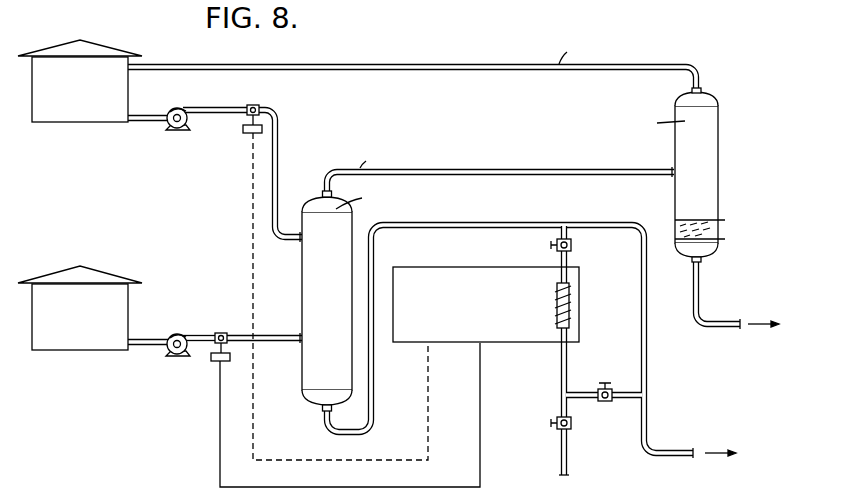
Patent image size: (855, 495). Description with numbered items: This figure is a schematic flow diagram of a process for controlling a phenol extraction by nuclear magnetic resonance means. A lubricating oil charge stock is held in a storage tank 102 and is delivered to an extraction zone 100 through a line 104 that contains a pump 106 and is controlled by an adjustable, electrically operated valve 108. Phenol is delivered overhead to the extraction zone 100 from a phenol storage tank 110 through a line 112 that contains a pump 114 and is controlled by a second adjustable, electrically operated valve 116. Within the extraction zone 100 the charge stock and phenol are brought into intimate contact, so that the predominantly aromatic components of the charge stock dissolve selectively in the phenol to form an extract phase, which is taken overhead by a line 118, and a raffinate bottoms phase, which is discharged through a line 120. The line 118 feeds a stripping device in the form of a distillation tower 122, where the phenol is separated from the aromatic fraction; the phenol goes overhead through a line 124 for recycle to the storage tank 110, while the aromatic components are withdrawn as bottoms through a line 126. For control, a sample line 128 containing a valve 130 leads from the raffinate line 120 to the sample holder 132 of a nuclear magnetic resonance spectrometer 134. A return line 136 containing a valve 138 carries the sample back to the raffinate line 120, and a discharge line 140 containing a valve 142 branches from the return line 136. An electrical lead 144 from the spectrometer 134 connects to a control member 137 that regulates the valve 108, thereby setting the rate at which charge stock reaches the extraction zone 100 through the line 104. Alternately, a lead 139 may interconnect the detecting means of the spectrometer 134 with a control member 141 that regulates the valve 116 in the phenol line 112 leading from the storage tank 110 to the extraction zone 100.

The extraction zone 100 is at (341, 316).
The storage tank 102 is at (98, 275).
The line 104 is at (270, 335).
The pump 106 is at (180, 333).
The adjustable, electrically operated valve 108 is at (220, 333).
The storage tank 110 is at (104, 48).
The line 112 is at (210, 107).
The pump 114 is at (179, 108).
The adjustable, electrically operated valve 116 is at (254, 105).
The line 118 is at (537, 170).
The line 120 is at (517, 222).
The distillation tower 122 is at (709, 178).
The line 124 is at (392, 63).
The line 126 is at (726, 314).
The sample line 128 is at (561, 366).
The valve 130 is at (572, 246).
The sample holder 132 is at (571, 307).
The nuclear magnetic resonance spectrometer 134 is at (437, 257).
The return line 136 is at (583, 392).
The control member 137 is at (215, 362).
The valve 138 is at (605, 401).
The lead 139 is at (429, 444).
The discharge line 140 is at (561, 457).
The control member 141 is at (247, 134).
The valve 142 is at (570, 428).
The electrical lead 144 is at (481, 478).